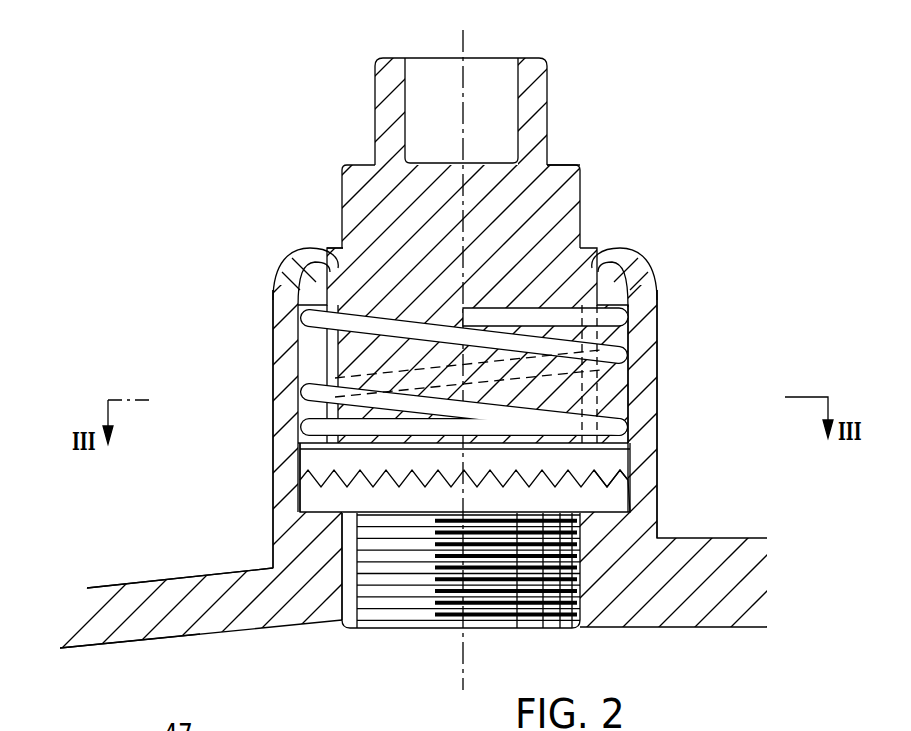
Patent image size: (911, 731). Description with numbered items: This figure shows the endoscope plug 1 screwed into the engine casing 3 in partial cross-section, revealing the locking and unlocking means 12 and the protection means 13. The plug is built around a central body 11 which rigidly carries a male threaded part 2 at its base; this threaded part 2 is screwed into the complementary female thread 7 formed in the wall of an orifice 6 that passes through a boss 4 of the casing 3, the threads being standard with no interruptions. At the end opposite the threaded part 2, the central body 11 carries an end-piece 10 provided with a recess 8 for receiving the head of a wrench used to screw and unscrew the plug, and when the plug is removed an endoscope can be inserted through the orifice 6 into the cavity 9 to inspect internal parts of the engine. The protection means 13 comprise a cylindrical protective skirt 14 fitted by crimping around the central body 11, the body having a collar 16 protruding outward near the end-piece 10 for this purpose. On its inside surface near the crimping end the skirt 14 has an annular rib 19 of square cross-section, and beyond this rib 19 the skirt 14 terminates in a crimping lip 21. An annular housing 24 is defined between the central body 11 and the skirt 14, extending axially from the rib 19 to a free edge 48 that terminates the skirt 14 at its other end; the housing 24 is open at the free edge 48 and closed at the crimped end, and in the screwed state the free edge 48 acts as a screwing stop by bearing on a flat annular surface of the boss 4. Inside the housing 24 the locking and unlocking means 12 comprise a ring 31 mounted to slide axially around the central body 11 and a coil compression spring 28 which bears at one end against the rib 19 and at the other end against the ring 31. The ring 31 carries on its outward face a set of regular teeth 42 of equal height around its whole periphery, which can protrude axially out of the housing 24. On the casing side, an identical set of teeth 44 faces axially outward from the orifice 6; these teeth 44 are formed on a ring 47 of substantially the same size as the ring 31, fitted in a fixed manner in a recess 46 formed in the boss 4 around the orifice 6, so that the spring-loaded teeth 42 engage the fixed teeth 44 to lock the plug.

The endoscope plug 1 is at (600, 131).
The male threaded part 2 is at (422, 605).
The engine casing 3 is at (128, 613).
The boss 4 is at (283, 553).
The orifice 6 is at (390, 563).
The female thread 7 is at (330, 593).
The recess 8 is at (490, 87).
The cavity 9 is at (98, 677).
The end-piece 10 is at (580, 207).
The central body 11 is at (480, 364).
The locking and unlocking means 12 is at (617, 405).
The protection means 13 is at (662, 322).
The protective skirt 14 is at (290, 363).
The collar 16 is at (333, 252).
The annular rib 19 is at (645, 275).
The crimping lip 21 is at (287, 262).
The annular housing 24 is at (318, 348).
The coil compression spring 28 is at (305, 397).
The ring 31 is at (600, 452).
The set of teeth 42 is at (300, 455).
The set of teeth 44 is at (555, 497).
The recess 46 is at (300, 500).
The ring 47 is at (587, 517).
The free edge 48 is at (645, 495).